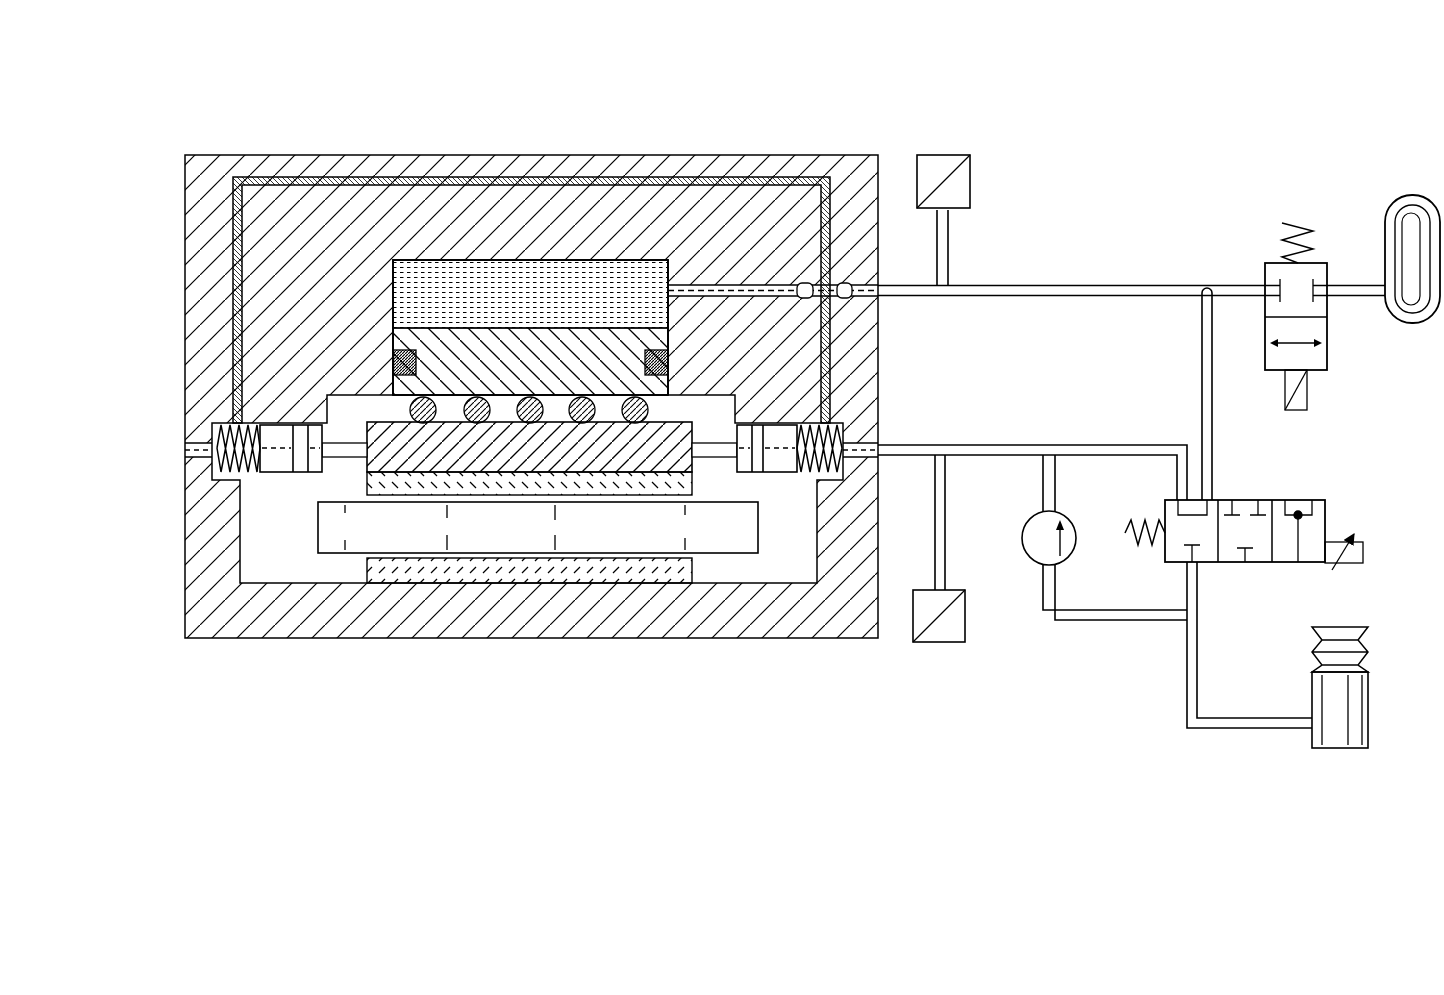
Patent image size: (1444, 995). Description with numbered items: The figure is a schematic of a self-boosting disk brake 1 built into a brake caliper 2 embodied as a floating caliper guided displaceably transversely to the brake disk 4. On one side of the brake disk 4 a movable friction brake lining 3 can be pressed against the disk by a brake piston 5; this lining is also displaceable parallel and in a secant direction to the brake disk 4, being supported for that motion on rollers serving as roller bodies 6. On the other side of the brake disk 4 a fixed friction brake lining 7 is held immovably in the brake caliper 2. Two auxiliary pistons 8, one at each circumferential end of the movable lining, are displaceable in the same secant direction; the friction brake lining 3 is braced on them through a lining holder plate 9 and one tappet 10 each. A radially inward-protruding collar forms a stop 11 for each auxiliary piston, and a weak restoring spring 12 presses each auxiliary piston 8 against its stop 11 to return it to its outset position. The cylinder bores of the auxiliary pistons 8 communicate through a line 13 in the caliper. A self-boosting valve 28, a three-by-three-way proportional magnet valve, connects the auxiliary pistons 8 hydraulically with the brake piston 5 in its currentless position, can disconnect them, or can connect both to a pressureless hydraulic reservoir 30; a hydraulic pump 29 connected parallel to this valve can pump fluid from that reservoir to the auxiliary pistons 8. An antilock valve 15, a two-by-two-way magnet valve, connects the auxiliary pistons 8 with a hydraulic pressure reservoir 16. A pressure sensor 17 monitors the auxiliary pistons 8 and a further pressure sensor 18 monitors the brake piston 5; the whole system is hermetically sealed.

The disk brake 1 is at (205, 84).
The brake caliper 2 is at (210, 290).
The friction brake lining 3 is at (557, 487).
The brake disk 4 is at (497, 523).
The brake piston 5 is at (560, 360).
The roller bodies 6 is at (633, 415).
The friction brake lining 7 is at (435, 575).
The auxiliary pistons 8 is at (278, 440).
The lining holder plate 9 is at (423, 460).
The tappet 10 is at (347, 448).
The stop 11 is at (313, 458).
The restoring spring 12 is at (213, 441).
The line 13 is at (735, 182).
The antilock valve 15 is at (1315, 360).
The hydraulic reservoir 16 is at (1408, 220).
The pressure sensor 17 is at (933, 648).
The pressure sensor 18 is at (947, 155).
The self-boosting valve 28 is at (1315, 527).
The hydraulic pump 29 is at (1042, 520).
The hydraulic reservoir 30 is at (1337, 700).